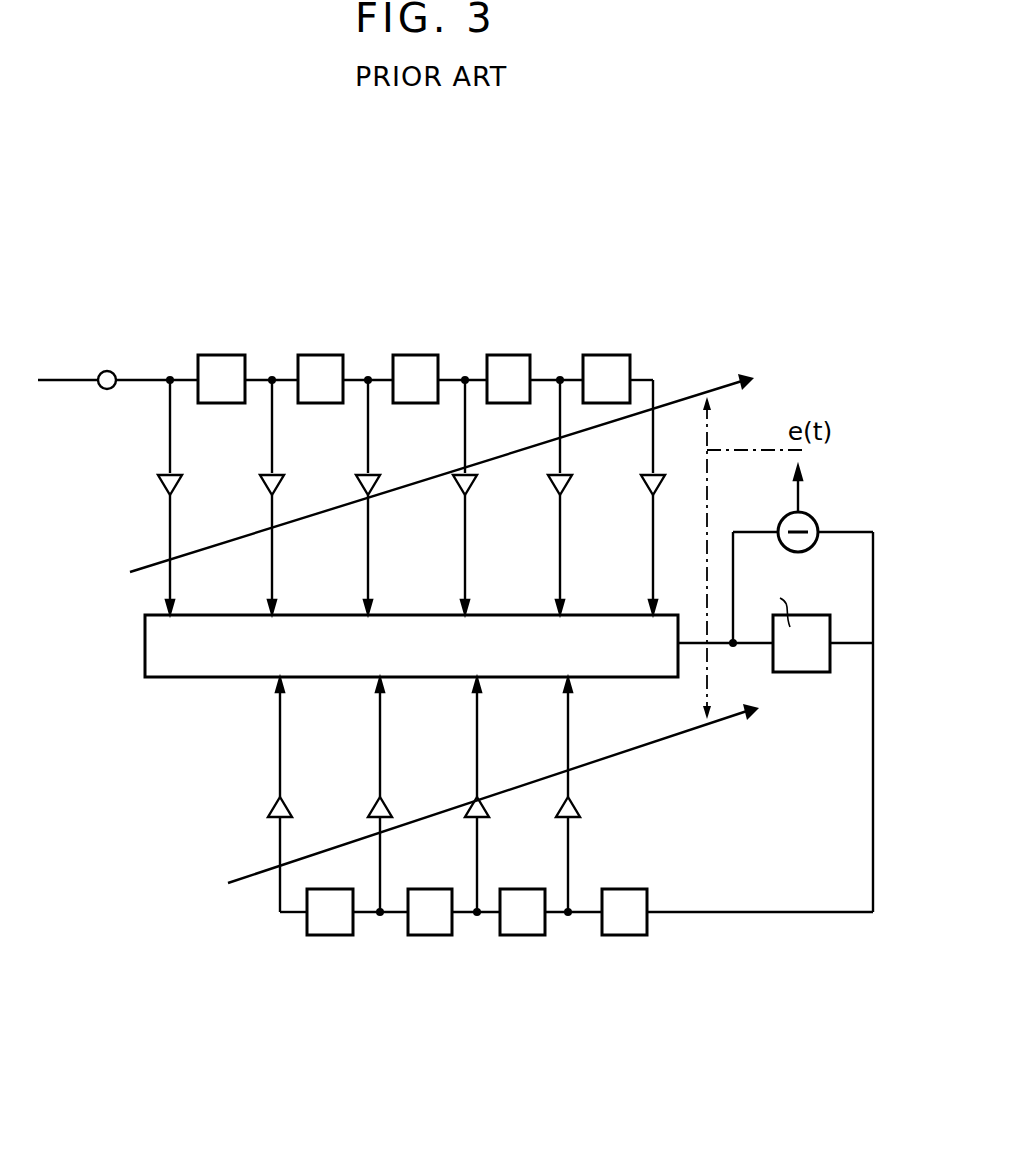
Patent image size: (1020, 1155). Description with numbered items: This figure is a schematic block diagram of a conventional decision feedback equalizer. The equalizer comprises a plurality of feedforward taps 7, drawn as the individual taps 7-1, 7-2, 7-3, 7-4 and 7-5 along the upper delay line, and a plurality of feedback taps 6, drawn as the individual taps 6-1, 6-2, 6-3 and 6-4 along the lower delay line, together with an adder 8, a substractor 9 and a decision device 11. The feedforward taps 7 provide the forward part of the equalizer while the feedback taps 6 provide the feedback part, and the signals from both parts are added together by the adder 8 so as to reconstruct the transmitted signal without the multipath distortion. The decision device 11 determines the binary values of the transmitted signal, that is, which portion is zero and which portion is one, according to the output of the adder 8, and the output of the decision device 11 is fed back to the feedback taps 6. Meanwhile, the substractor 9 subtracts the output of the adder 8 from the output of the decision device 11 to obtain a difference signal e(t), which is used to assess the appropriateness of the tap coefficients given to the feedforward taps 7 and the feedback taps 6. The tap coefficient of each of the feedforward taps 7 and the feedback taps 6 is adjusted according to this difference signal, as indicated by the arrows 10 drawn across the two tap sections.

The feedback taps 6 is at (322, 1041).
The feedback tap 6-1 is at (339, 935).
The feedback tap 6-2 is at (430, 935).
The feedback tap 6-3 is at (517, 935).
The feedback tap 6-4 is at (622, 935).
The feedforward taps 7 is at (650, 232).
The feedforward tap 7-1 is at (238, 355).
The feedforward tap 7-2 is at (327, 355).
The feedforward tap 7-3 is at (422, 355).
The feedforward tap 7-4 is at (512, 355).
The feedforward tap 7-5 is at (608, 355).
The adder 8 is at (145, 647).
The substractor 9 is at (813, 518).
The arrows 10 is at (678, 402).
The decision device 11 is at (793, 672).